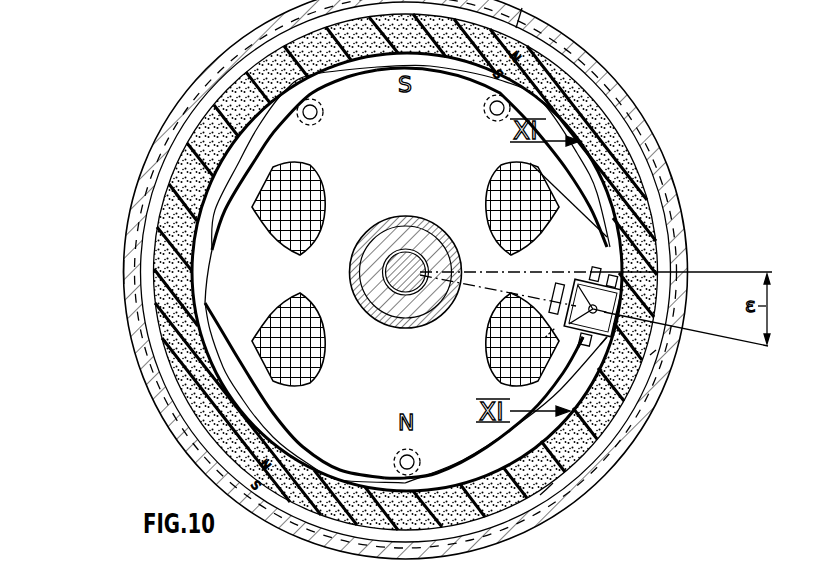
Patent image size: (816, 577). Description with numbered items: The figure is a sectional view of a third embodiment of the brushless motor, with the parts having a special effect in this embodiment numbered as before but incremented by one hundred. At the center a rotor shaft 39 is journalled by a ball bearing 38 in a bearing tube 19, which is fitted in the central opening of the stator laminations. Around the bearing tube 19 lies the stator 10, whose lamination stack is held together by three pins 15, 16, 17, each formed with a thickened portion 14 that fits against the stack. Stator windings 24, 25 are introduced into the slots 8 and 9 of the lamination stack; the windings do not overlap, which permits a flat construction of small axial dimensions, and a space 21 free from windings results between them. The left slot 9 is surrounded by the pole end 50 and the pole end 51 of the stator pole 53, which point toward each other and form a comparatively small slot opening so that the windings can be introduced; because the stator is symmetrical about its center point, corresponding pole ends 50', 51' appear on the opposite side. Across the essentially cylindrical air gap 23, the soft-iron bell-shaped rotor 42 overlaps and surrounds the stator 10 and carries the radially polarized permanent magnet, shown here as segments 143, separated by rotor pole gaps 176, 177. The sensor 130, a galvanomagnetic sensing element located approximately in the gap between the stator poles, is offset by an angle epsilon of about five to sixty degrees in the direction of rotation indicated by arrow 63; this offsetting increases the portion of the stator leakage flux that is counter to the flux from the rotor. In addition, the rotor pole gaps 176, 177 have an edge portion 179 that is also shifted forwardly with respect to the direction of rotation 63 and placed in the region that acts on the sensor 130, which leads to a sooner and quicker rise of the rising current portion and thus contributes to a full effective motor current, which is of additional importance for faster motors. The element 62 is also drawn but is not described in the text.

The slot 8 is at (485, 200).
The slot 9 is at (326, 200).
The stator 10 is at (408, 192).
The thickened portion 14 is at (336, 98).
The pin 15 is at (414, 462).
The pin 16 is at (489, 114).
The pin 17 is at (319, 118).
The bearing tube 19 is at (378, 315).
The space free from windings 21 is at (280, 268).
The air gap 23 is at (210, 367).
The stator winding 24 is at (607, 188).
The stator winding 25 is at (618, 389).
The ball bearing 38 is at (433, 312).
The rotor shaft 39 is at (410, 266).
The bell-shaped rotor 42 is at (628, 131).
The pole end 50 is at (247, 160).
The pole end 50' is at (671, 370).
The pole end 51 is at (199, 409).
The pole end 51' is at (616, 135).
The stator pole 53 is at (543, 494).
The housing cover 62 is at (522, 14).
The direction of rotation 63 is at (660, 354).
The sensor 130 is at (578, 284).
The rotor magnet segments 143 is at (593, 215).
The rotor pole gap 176 is at (660, 252).
The rotor pole gap 177 is at (132, 269).
The edge portion 179 is at (150, 224).